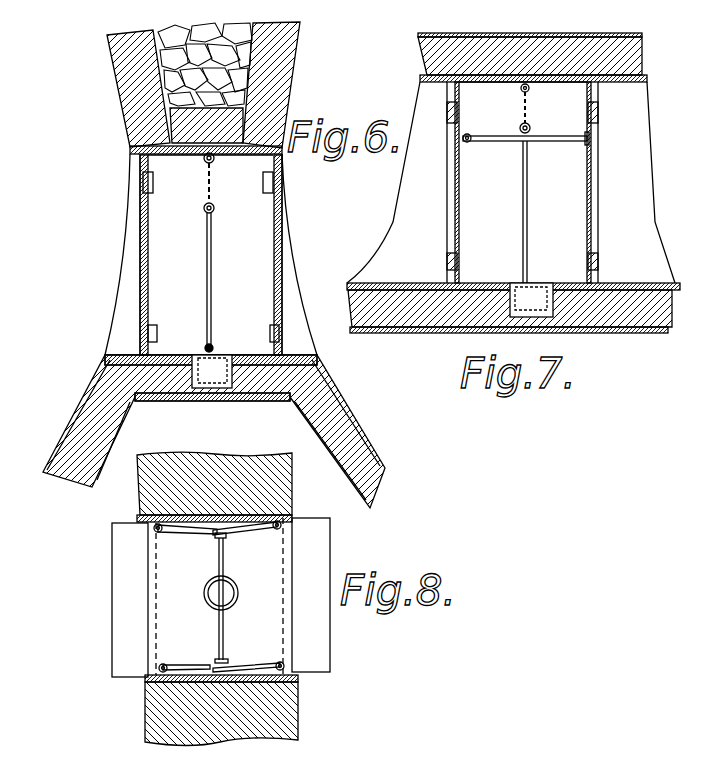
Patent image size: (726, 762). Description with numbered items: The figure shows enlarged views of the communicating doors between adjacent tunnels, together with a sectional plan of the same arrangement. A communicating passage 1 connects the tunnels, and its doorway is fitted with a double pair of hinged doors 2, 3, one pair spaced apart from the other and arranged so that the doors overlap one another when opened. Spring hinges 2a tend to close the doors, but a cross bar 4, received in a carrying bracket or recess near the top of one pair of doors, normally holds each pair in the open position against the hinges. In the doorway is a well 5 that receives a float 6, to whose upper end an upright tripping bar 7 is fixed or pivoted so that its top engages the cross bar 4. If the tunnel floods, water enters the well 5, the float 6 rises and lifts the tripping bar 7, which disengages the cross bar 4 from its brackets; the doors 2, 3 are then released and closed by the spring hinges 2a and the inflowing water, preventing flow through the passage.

In FIG. 6, the communicating passage 1 is at (253, 215).
In FIG. 7, the communicating passage 1 is at (570, 156).
In FIG. 8, the communicating passage 1 is at (221, 598).
In FIG. 6, the hinged door 2 is at (148, 240).
In FIG. 7, the hinged door 2 is at (459, 178).
In FIG. 8, the hinged door 2 is at (198, 535).
In FIG. 6, the hinged door 3 is at (273, 242).
In FIG. 8, the hinged door 3 is at (255, 533).
In FIG. 6, the spring hinge 2a is at (143, 182).
In FIG. 8, the spring hinge 2a is at (150, 530).
In FIG. 6, the cross bar 4 is at (215, 207).
In FIG. 7, the cross bar 4 is at (530, 128).
In FIG. 8, the cross bar 4 is at (230, 619).
In FIG. 6, the well 5 is at (229, 358).
In FIG. 7, the well 5 is at (543, 285).
In FIG. 8, the well 5 is at (238, 595).
In FIG. 6, the float 6 is at (205, 368).
In FIG. 7, the float 6 is at (527, 285).
In FIG. 8, the float 6 is at (206, 595).
In FIG. 6, the tripping bar 7 is at (212, 268).
In FIG. 7, the tripping bar 7 is at (527, 210).
In FIG. 8, the tripping bar 7 is at (221, 598).